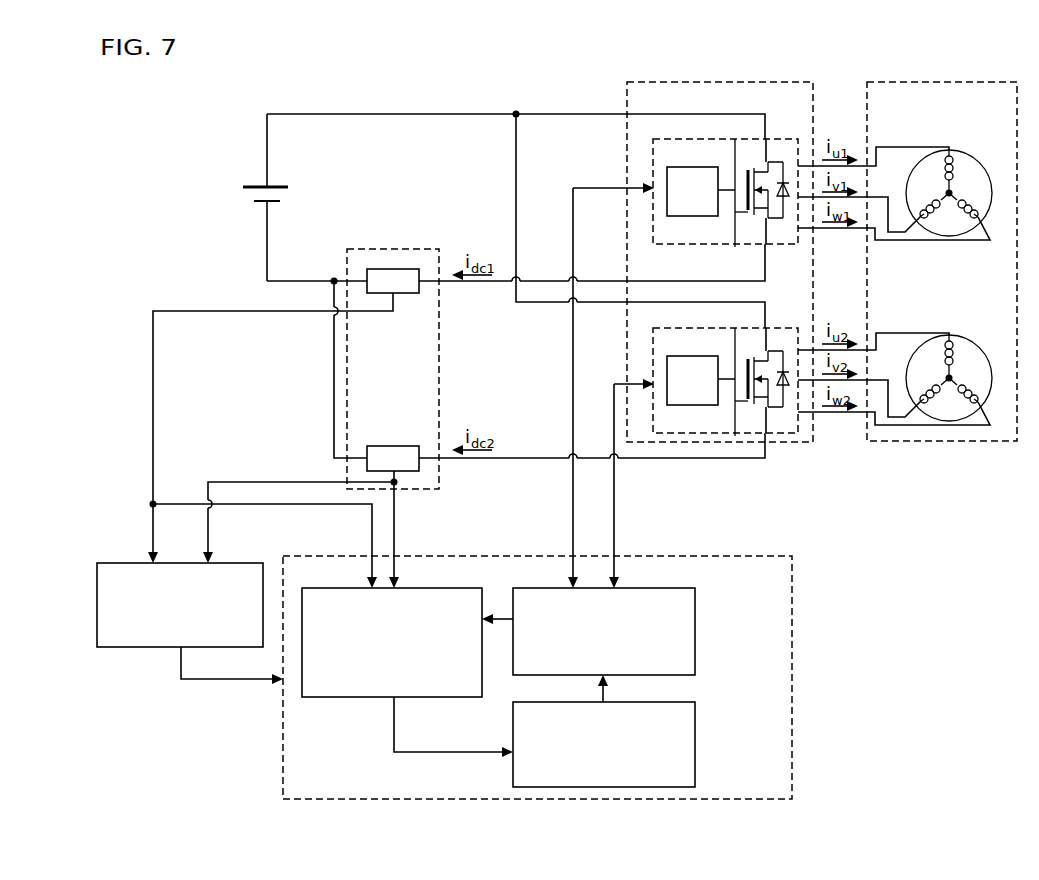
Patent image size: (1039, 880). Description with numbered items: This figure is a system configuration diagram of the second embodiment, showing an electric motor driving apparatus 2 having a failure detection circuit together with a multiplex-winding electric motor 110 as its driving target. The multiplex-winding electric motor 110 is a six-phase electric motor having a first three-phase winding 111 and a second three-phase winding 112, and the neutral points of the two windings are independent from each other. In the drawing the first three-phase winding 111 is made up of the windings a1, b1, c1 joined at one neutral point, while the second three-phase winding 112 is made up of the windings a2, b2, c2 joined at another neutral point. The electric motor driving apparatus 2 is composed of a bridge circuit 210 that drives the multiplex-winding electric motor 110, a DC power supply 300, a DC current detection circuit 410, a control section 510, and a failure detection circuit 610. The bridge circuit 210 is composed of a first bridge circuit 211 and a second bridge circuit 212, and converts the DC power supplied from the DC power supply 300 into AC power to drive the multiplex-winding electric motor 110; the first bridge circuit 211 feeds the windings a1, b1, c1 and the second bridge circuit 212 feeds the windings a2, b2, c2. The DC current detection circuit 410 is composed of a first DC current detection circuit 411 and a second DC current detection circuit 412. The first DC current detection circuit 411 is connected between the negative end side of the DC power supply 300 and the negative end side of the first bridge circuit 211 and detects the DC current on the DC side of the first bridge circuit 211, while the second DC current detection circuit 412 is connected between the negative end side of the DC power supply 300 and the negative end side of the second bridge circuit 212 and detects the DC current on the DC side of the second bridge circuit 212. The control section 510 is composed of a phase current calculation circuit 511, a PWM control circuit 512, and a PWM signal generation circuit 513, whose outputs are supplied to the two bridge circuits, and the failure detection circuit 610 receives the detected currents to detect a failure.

The electric motor driving apparatus 2 is at (905, 580).
The multiplex-winding electric motor 110 is at (962, 82).
The first three-phase winding 111 is at (905, 187).
The second three-phase winding 112 is at (905, 384).
The winding a1 is at (944, 162).
The winding b1 is at (935, 222).
The winding c1 is at (972, 198).
The second motor phase coil a a2 is at (944, 347).
The second motor phase coil b b2 is at (937, 405).
The second motor phase coil c c2 is at (972, 383).
The bridge circuit 210 is at (773, 82).
The first bridge circuit 211 is at (771, 139).
The second bridge circuit 212 is at (771, 328).
The DC power supply 300 is at (278, 184).
The DC current detection circuit 410 is at (432, 249).
The first DC current detection circuit 411 is at (405, 294).
The second DC current detection circuit 412 is at (405, 446).
The control section 510 is at (792, 602).
The phase current calculation circuit 511 is at (432, 588).
The PWM control circuit 512 is at (695, 725).
The PWM signal generation circuit 513 is at (695, 619).
The failure detection circuit 610 is at (115, 563).